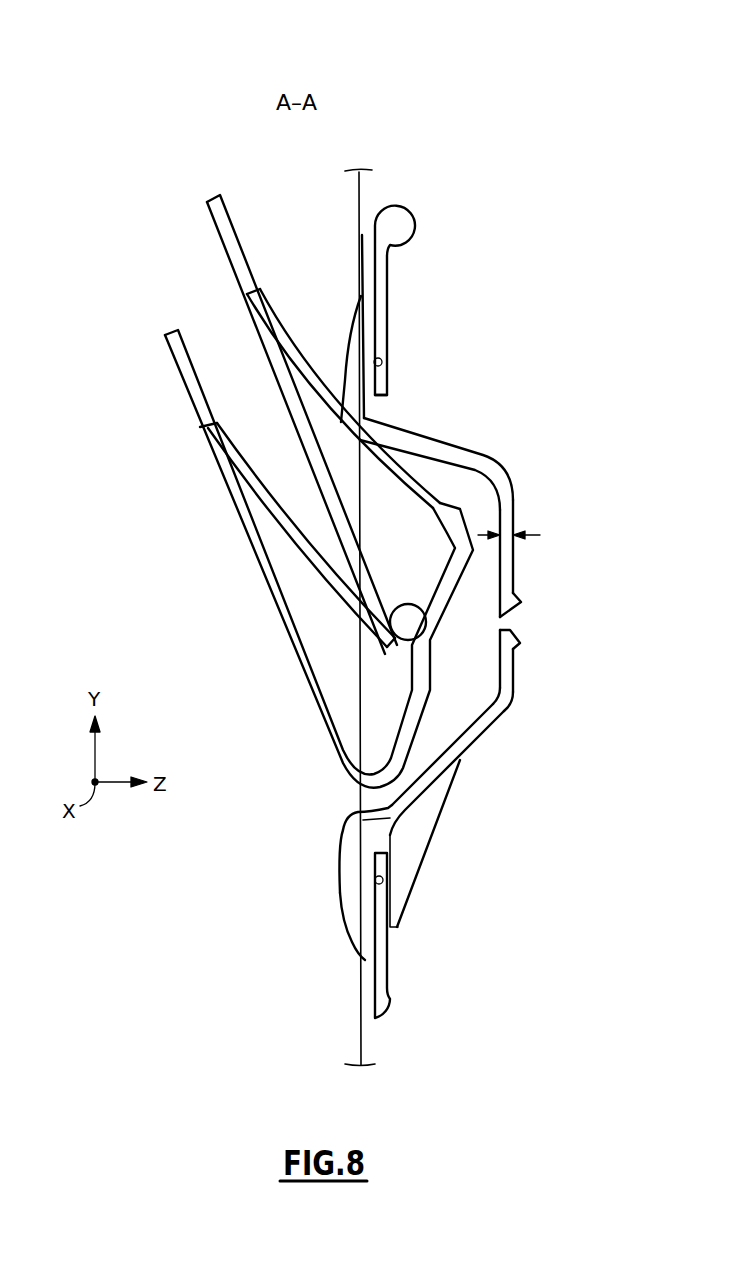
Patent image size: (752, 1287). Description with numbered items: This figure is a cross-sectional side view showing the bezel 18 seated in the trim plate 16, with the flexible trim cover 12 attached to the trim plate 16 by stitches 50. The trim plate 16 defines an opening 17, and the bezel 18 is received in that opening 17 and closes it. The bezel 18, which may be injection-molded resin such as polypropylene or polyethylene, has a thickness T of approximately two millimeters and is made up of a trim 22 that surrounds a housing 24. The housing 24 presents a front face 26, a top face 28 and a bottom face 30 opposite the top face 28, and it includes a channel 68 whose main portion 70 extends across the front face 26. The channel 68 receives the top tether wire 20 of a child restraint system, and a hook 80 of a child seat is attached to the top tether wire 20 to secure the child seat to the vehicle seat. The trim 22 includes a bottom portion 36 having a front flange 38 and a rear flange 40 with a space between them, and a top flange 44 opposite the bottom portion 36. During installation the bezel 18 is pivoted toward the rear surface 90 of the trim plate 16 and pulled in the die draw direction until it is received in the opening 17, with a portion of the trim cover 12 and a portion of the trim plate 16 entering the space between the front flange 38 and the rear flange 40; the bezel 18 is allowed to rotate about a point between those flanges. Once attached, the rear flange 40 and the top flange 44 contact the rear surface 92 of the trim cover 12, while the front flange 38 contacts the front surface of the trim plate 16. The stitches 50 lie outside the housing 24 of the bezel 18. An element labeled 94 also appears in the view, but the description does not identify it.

The trim cover 12 is at (358, 200).
The trim plate 16 is at (386, 292).
The opening 17 is at (378, 410).
The bezel 18 is at (512, 710).
The top tether wire 20 is at (400, 617).
The trim 22 is at (358, 337).
The housing 24 is at (515, 670).
The front face 26 is at (515, 503).
The top face 28 is at (465, 447).
The bottom face 30 is at (485, 740).
The bottom portion 36 is at (292, 918).
The front flange 38 is at (415, 838).
The rear flange 40 is at (347, 837).
The top flange 44 is at (350, 375).
The stitches 50 is at (382, 362).
The channel 68 is at (507, 622).
The main portion 70 is at (518, 631).
The hook 80 is at (270, 590).
The rear surface 90 is at (368, 1008).
The rear surface 92 is at (362, 962).
The tab end 94 is at (392, 940).
The thickness T is at (517, 544).